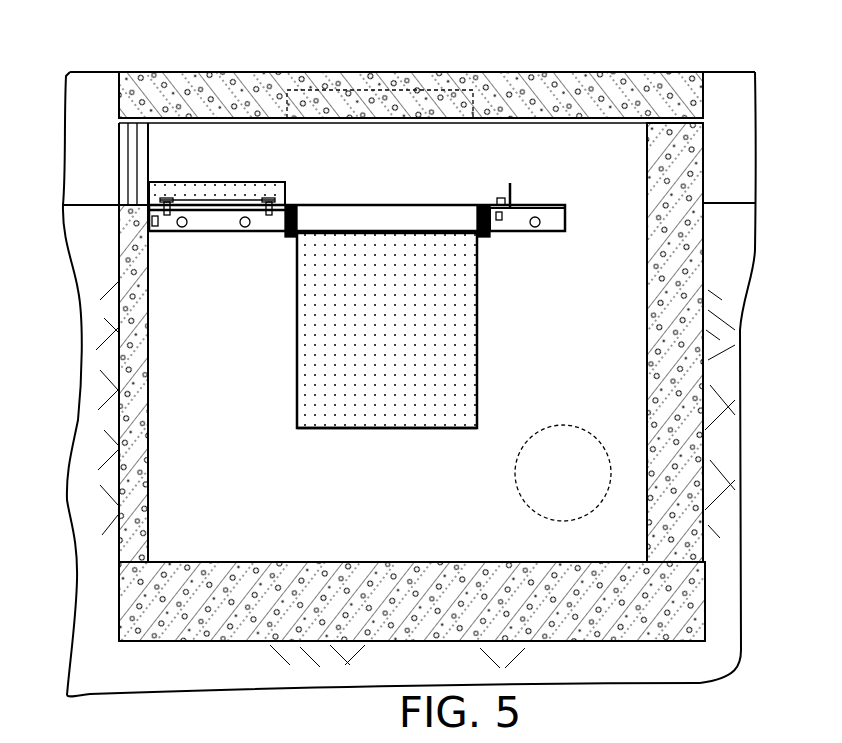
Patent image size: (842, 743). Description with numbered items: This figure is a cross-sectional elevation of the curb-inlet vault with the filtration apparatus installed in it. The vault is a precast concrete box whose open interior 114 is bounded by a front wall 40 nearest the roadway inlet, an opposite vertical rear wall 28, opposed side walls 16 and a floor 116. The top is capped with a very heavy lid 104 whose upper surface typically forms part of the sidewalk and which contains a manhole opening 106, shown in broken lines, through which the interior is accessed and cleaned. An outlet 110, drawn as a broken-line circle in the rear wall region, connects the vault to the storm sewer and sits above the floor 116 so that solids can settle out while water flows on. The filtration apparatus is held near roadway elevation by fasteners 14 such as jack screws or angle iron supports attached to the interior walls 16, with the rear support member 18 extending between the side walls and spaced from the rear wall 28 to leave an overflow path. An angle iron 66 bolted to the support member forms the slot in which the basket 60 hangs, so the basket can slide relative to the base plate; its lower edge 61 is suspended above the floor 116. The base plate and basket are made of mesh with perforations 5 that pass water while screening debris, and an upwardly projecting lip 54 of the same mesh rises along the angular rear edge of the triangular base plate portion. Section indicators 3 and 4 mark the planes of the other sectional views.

The section line 3- 3 is at (53, 165).
The section line 4- 4 is at (148, 92).
The perforations 5 is at (413, 252).
The fasteners 14 is at (553, 233).
The side walls 16 is at (247, 490).
The rear support member 18 is at (512, 192).
The rear wall 28 is at (647, 290).
The front wall 40 is at (146, 428).
The upwardly projecting lip 54 is at (228, 182).
The basket 60 is at (286, 344).
The lower edge 61 is at (422, 430).
The angle iron 66 is at (291, 218).
The lid 104 is at (565, 72).
The manhole opening 106 is at (387, 90).
The outlet 110 is at (573, 425).
The open interior 114 is at (195, 286).
The floor 116 is at (326, 562).